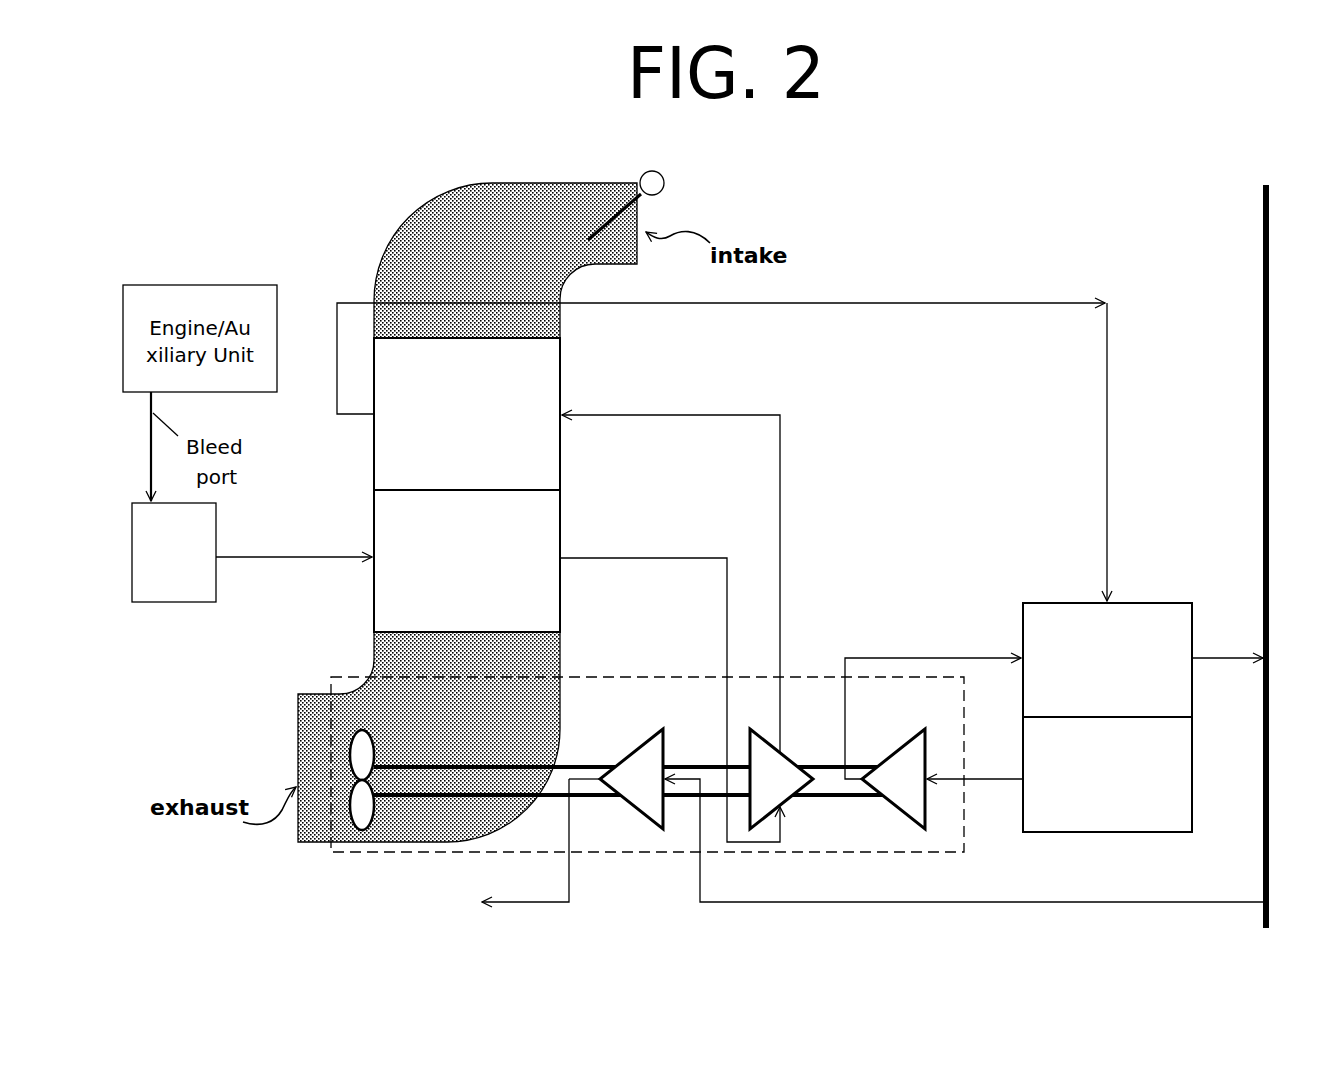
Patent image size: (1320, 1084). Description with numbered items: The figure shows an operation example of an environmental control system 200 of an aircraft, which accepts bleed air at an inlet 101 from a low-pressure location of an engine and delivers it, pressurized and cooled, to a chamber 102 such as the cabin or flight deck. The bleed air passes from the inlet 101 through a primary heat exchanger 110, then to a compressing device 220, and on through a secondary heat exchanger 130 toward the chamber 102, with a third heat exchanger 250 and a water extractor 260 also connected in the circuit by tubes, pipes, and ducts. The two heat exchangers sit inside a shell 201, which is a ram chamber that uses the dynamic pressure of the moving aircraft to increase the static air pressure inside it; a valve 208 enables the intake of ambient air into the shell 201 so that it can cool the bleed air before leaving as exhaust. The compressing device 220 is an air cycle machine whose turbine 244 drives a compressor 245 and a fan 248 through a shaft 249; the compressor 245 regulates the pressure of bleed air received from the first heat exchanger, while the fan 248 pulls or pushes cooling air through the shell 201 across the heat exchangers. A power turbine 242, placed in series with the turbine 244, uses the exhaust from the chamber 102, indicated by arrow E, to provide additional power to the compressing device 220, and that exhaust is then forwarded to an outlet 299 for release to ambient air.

The environmental control system 200 is at (218, 150).
The shell 201 is at (503, 182).
The valve 208 is at (643, 173).
The compressing device 220 is at (329, 678).
The fan 248 is at (395, 717).
The shaft 249 is at (588, 765).
The power turbine 242 is at (631, 779).
The compressor 245 is at (781, 779).
The turbine 244 is at (893, 779).
The secondary heat exchanger 130 is at (467, 414).
The primary heat exchanger 110 is at (467, 561).
The inlet 101 is at (174, 552).
The third heat exchanger 250 is at (1107, 660).
The water extractor 260 is at (1107, 774).
The chamber 102 is at (1262, 203).
The outlet 299 is at (488, 913).
The arrow E is at (797, 903).